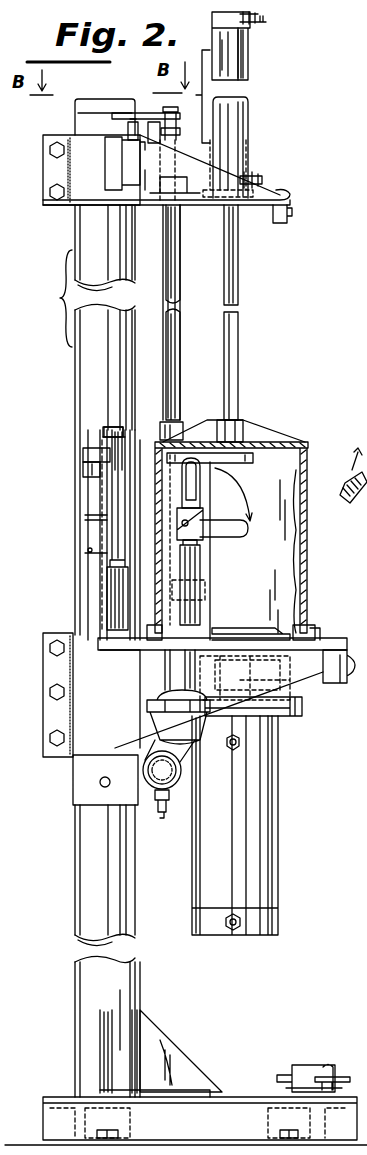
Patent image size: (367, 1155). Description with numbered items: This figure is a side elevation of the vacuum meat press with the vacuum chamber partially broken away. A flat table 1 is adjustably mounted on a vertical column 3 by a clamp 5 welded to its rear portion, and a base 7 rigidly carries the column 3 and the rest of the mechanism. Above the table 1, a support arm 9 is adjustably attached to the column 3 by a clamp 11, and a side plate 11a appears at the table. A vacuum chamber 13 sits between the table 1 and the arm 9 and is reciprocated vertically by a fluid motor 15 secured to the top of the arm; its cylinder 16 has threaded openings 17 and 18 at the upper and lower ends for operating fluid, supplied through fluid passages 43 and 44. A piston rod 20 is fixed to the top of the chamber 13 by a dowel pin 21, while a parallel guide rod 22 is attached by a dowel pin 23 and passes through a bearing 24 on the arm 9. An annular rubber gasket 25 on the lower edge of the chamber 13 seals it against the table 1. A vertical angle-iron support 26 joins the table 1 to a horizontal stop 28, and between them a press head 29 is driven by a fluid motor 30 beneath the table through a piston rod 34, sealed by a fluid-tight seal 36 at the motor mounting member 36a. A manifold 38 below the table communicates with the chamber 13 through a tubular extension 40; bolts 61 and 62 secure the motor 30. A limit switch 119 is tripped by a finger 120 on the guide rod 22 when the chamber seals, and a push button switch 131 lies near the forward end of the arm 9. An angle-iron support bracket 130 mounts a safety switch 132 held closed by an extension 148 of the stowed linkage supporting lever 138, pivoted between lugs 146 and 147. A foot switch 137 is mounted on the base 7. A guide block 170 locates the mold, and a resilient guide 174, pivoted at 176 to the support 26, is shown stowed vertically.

The table 1 is at (342, 642).
The vertical column 3 is at (125, 312).
The clamp 5 is at (50, 660).
The base 7 is at (232, 1115).
The support arm 9 is at (284, 200).
The clamp 11 is at (52, 170).
The side plate 11a is at (343, 688).
The vacuum chamber 13 is at (275, 446).
The fluid motor 15 is at (226, 74).
The cylinder 16 is at (247, 67).
The threaded opening 17 is at (248, 40).
The threaded opening 18 is at (266, 98).
The piston rod 20 is at (240, 335).
The dowel pin 21 is at (246, 428).
The guide rod 22 is at (191, 302).
The dowel pin 23 is at (182, 428).
The bearing 24 is at (185, 198).
The annular rubber gasket 25 is at (315, 632).
The angle-iron support 26 is at (205, 558).
The stop 28 is at (255, 462).
The press head 29 is at (226, 630).
The fluid motor 30 is at (278, 828).
The piston rod 34 is at (258, 666).
The fluid-tight seal 36 is at (290, 690).
The motor mounting member 36a is at (334, 699).
The manifold 38 is at (180, 797).
The tubular extension 40 is at (165, 690).
The fluid passage 43 is at (262, 178).
The fluid passage 44 is at (262, 17).
The bolt 61 is at (233, 913).
The bolt 62 is at (233, 748).
The limit switch 119 is at (128, 132).
The finger 120 is at (148, 115).
The angle-iron support bracket 130 is at (90, 628).
The push button switch 131 is at (282, 222).
The safety switch 132 is at (90, 495).
The switch 137 is at (305, 1062).
The lever 138 is at (118, 548).
The lug 146 is at (104, 438).
The lug 147 is at (90, 470).
The extension 148 is at (92, 462).
The guide block 170 is at (215, 583).
The resilient guide 174 is at (204, 482).
The pivot 176 is at (203, 530).